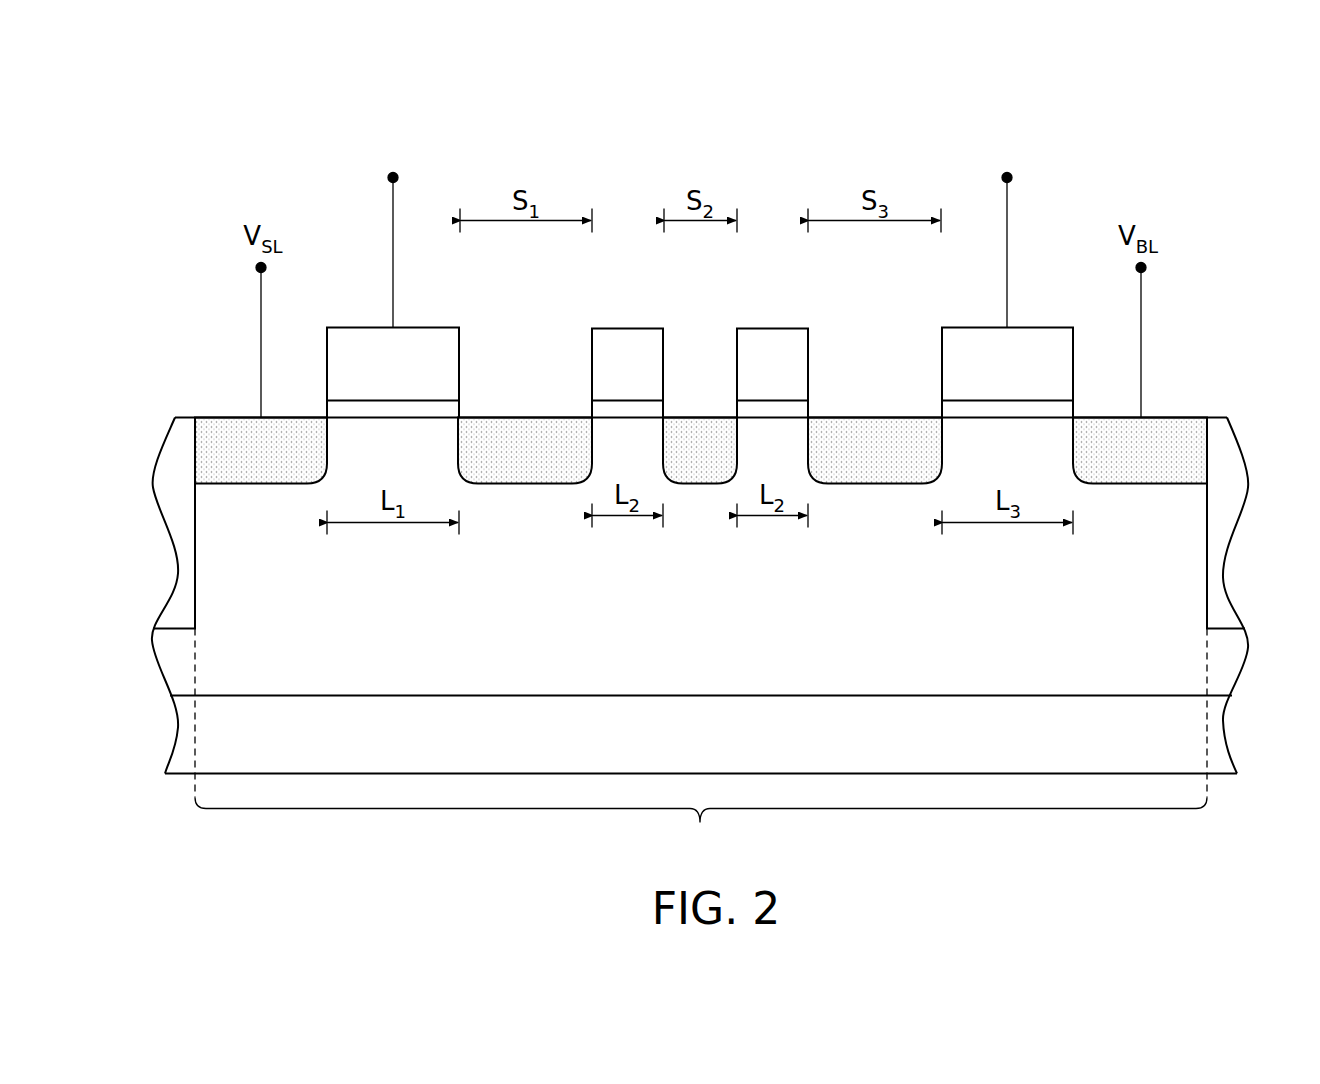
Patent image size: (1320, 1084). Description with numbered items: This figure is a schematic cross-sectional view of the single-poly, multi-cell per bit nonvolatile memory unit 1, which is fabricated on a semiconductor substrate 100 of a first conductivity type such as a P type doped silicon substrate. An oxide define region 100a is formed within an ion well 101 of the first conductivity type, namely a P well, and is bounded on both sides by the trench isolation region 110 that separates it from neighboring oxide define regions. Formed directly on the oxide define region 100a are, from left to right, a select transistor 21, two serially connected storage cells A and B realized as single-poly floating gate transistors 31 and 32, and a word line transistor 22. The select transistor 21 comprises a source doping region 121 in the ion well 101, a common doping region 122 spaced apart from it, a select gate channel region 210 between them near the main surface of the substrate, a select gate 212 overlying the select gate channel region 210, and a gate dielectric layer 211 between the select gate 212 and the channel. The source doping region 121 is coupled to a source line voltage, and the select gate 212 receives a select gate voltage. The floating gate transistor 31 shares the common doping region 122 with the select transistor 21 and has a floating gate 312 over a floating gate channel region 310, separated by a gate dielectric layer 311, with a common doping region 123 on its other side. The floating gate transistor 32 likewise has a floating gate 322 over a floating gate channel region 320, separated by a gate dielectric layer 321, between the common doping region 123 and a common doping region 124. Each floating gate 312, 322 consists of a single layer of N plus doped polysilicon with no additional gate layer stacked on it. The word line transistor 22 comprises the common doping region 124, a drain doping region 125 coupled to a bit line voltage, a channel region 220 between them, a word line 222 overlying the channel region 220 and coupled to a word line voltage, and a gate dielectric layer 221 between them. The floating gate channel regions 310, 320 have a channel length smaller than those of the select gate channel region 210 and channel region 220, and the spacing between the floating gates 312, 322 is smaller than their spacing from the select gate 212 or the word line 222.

The single-poly, multi-cell per bit nonvolatile memory unit 1 is at (1246, 146).
The select transistor 21 is at (421, 273).
The word line transistor 22 is at (971, 273).
The floating gate transistor 31 is at (590, 332).
The floating gate transistor 32 is at (775, 332).
The semiconductor substrate 100 is at (1216, 730).
The oxide define region 100a is at (701, 829).
The ion well 101 is at (1228, 668).
The trench isolation region 110 is at (173, 487).
The source doping region 121 is at (268, 484).
The common doping region 122 is at (531, 484).
The common doping region 123 is at (701, 484).
The common doping region 124 is at (881, 484).
The drain doping region 125 is at (1141, 484).
The select gate channel region 210 is at (373, 459).
The gate dielectric layer 211 is at (459, 410).
The select gate 212 is at (433, 327).
The channel region 220 is at (988, 459).
The gate dielectric layer 221 is at (942, 410).
The word line 222 is at (942, 343).
The floating gate channel region 310 is at (607, 459).
The gate dielectric layer 311 is at (592, 410).
The floating gate 312 is at (592, 350).
The floating gate channel region 320 is at (752, 459).
The gate dielectric layer 321 is at (808, 410).
The floating gate 322 is at (808, 350).